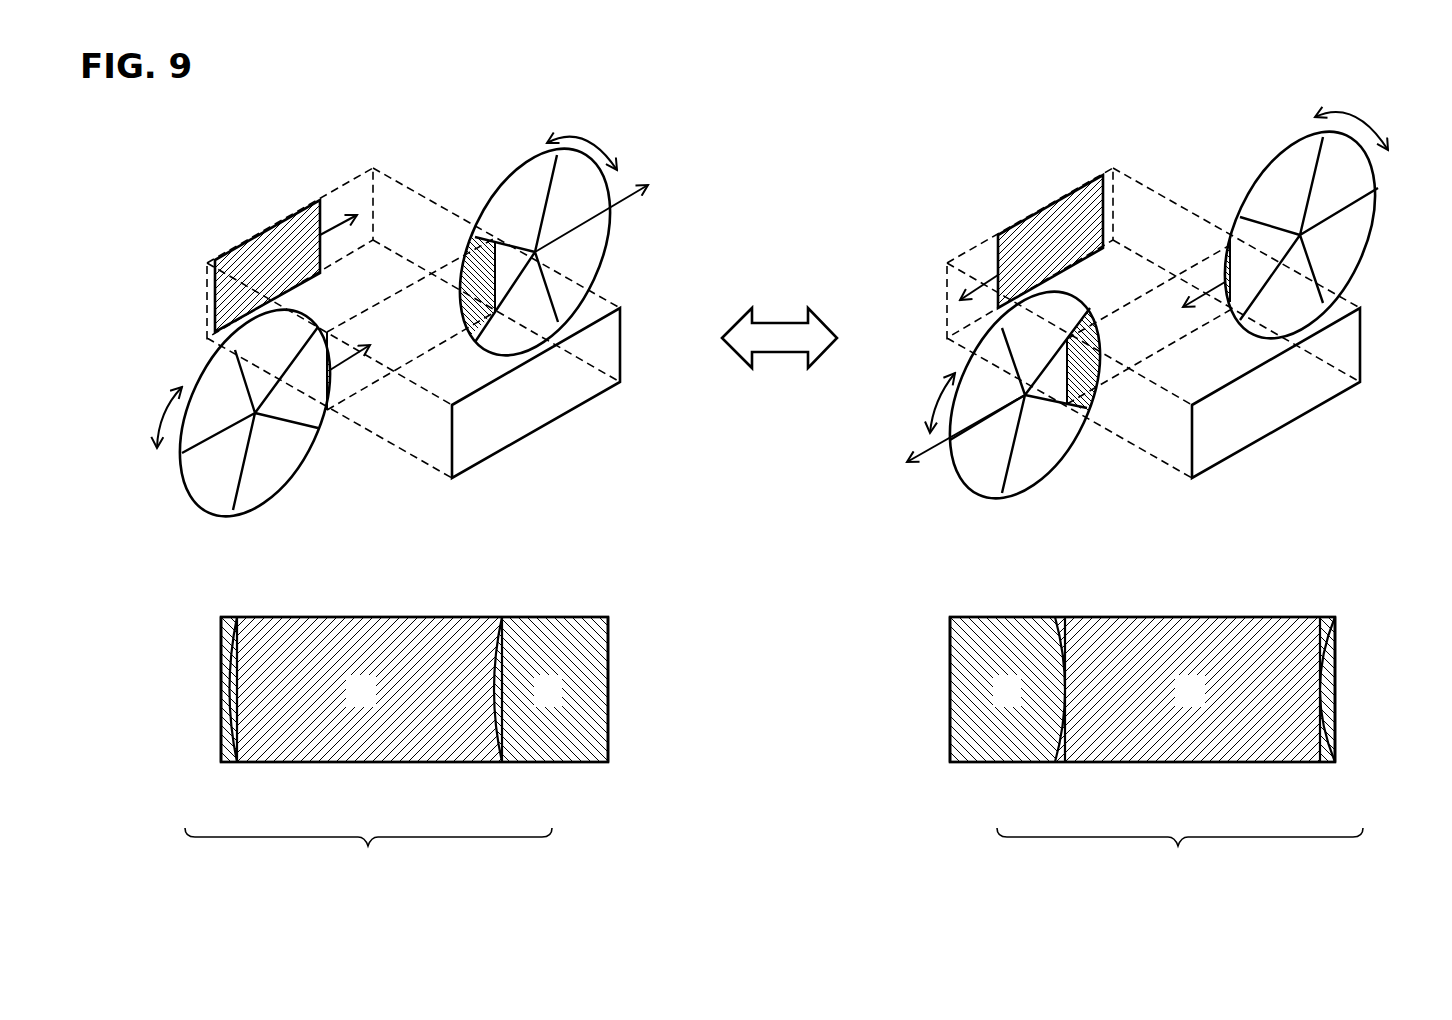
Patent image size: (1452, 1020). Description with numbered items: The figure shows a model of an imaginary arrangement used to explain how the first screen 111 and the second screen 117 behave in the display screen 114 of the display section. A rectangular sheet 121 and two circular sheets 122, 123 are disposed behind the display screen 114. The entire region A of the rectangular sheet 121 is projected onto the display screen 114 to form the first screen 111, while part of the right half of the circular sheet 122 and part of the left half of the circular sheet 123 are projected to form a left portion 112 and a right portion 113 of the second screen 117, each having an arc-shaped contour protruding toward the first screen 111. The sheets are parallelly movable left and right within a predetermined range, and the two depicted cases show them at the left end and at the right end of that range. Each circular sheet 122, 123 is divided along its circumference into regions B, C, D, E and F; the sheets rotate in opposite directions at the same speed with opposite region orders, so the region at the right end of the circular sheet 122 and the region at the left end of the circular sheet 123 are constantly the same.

The first screen 111 is at (383, 617).
The left portion 112 is at (221, 742).
The right portion 113 is at (568, 745).
The display screen 114 is at (620, 355).
The second screen 117 is at (774, 856).
The rectangular sheet 121 is at (240, 242).
The circular sheet 122 is at (195, 502).
The circular sheet 123 is at (613, 243).